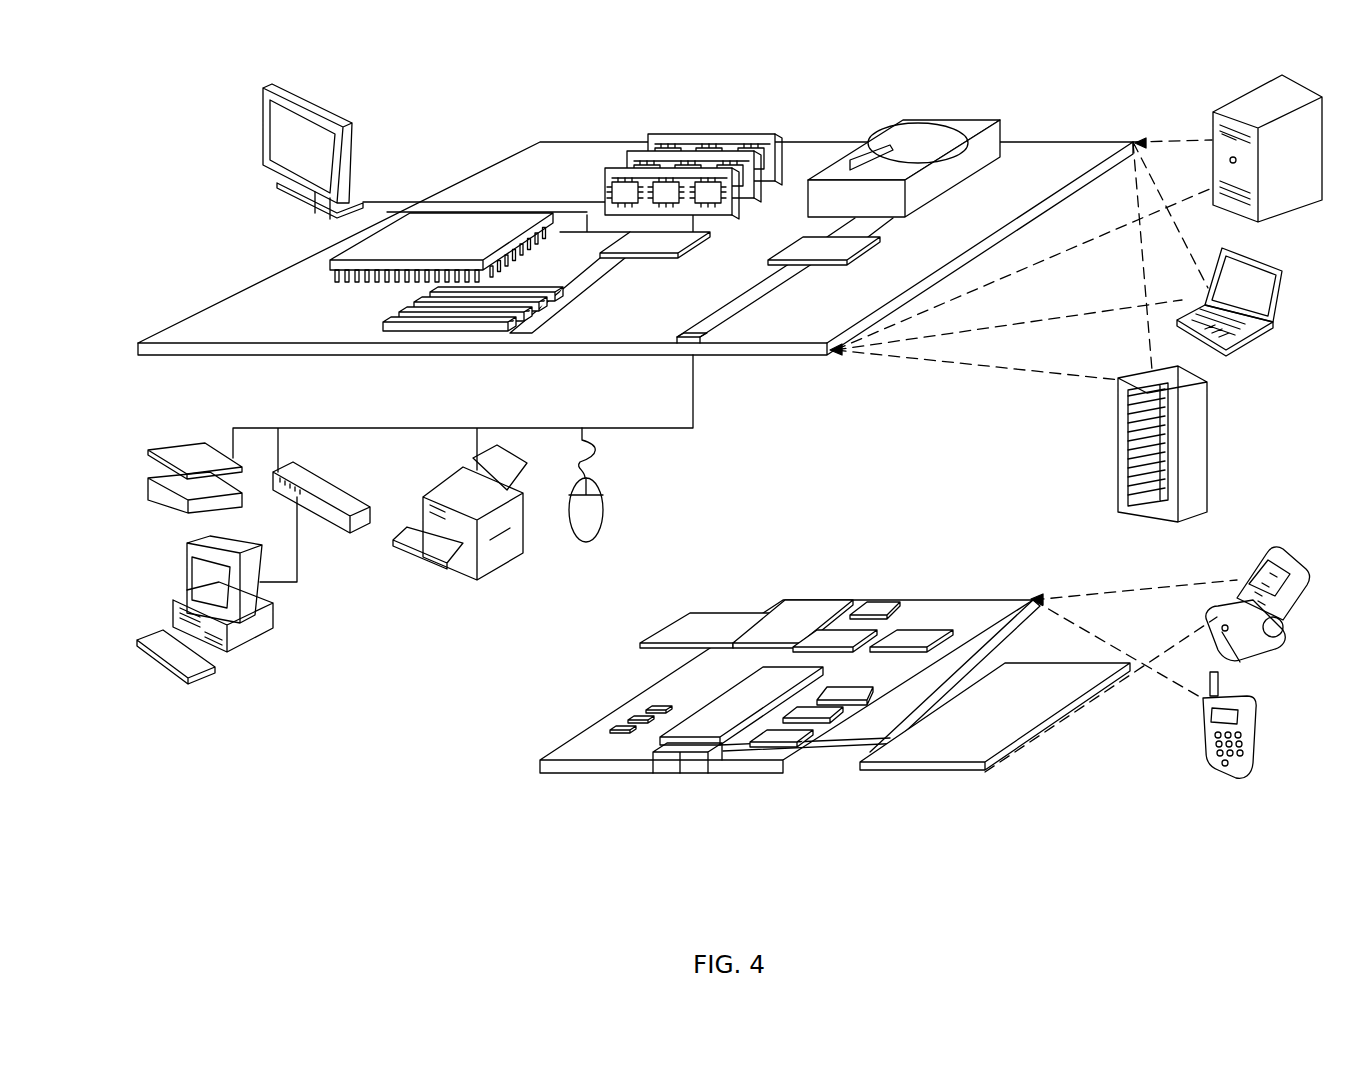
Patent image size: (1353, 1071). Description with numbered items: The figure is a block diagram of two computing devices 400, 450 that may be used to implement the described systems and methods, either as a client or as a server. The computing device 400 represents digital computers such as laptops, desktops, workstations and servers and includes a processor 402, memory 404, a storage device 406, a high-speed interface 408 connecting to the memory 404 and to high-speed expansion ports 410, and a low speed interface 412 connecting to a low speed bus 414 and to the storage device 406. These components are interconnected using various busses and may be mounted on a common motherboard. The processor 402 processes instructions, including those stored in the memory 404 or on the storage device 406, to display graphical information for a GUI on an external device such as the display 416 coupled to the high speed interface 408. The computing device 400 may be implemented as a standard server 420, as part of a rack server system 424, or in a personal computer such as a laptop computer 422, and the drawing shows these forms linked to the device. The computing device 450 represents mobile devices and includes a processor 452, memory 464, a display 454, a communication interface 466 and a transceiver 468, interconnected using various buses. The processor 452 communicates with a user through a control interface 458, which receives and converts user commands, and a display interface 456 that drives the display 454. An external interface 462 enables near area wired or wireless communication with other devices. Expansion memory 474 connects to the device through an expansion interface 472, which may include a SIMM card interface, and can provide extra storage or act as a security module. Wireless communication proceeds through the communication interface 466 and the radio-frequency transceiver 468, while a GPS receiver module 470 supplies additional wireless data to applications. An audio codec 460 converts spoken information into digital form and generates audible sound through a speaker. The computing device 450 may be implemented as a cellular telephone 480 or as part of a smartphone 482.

The computing device 400 is at (461, 117).
The processor 402 is at (330, 262).
The memory 404 is at (660, 133).
The storage device 406 is at (892, 118).
The high-speed interface 408 is at (632, 243).
The high-speed expansion ports 410 is at (407, 317).
The low speed interface 412 is at (807, 243).
The low speed bus 414 is at (703, 343).
The display 416 is at (263, 88).
The standard server 420 is at (1213, 123).
The laptop computer 422 is at (1280, 284).
The rack server system 424 is at (1120, 467).
The computing device 450 is at (516, 767).
The processor 452 is at (713, 727).
The display 454 is at (953, 747).
The display interface 456 is at (783, 737).
The control interface 458 is at (828, 707).
The audio codec 460 is at (845, 693).
The external interface 462 is at (680, 773).
The memory 464 is at (630, 720).
The communication interface 466 is at (835, 637).
The transceiver 468 is at (910, 637).
The GPS receiver module 470 is at (887, 602).
The expansion interface 472 is at (767, 612).
The expansion memory 474 is at (692, 612).
The cellular telephone 480 is at (1268, 562).
The smartphone 482 is at (1203, 725).